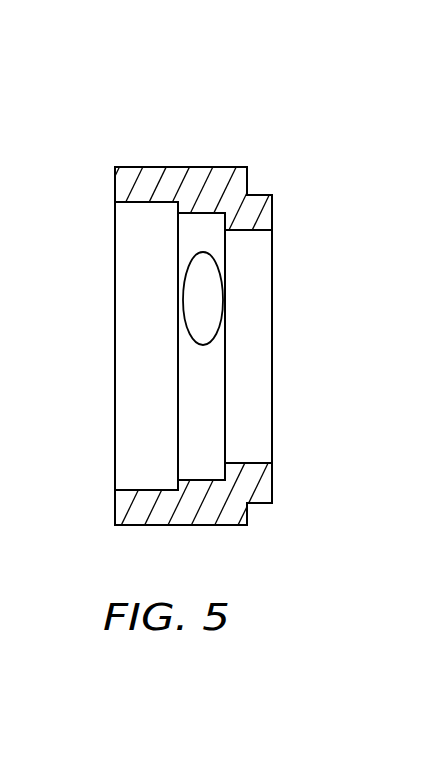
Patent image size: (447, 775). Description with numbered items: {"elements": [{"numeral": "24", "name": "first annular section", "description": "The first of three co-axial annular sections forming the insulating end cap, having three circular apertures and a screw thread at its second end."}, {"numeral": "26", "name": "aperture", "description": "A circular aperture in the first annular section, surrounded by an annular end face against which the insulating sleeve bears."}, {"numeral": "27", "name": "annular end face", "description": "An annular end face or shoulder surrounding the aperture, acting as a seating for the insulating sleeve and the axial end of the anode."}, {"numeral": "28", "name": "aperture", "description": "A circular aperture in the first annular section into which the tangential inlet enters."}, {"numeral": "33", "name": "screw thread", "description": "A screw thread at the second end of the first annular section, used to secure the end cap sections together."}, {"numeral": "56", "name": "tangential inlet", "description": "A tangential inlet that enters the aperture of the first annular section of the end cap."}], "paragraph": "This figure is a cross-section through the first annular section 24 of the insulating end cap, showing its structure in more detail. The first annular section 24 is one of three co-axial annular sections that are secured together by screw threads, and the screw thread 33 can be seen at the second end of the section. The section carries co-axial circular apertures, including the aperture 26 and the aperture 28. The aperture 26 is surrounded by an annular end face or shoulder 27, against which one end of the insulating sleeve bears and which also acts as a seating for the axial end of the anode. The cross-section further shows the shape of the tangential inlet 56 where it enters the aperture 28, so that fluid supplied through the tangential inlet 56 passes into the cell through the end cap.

The ring body 24 is at (133, 162).
The bottom flange 26 is at (128, 481).
The outer wall 27 is at (177, 206).
The inner wall 28 is at (203, 230).
The step / shoulder 33 is at (262, 193).
The aperture 56 is at (205, 282).